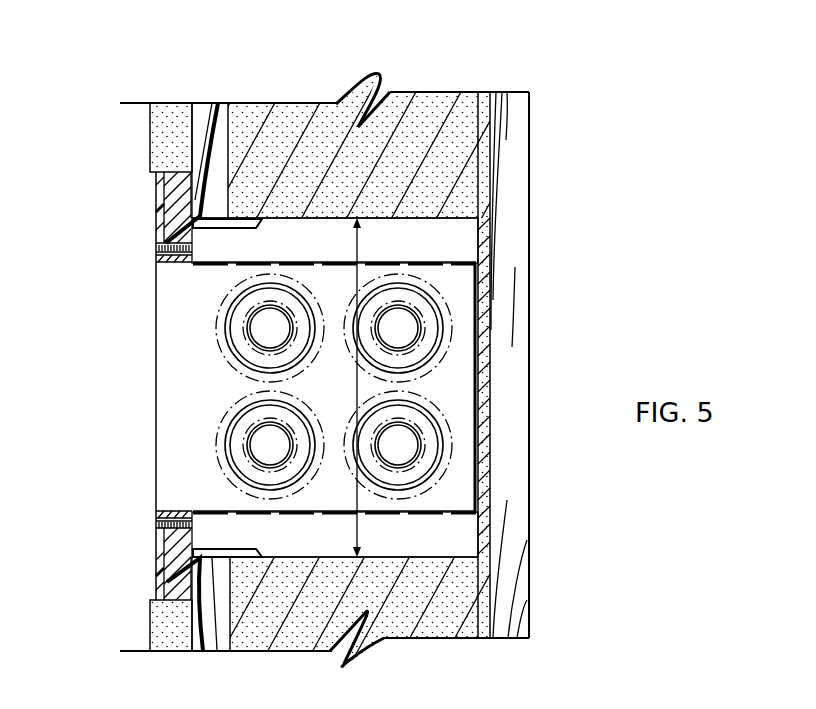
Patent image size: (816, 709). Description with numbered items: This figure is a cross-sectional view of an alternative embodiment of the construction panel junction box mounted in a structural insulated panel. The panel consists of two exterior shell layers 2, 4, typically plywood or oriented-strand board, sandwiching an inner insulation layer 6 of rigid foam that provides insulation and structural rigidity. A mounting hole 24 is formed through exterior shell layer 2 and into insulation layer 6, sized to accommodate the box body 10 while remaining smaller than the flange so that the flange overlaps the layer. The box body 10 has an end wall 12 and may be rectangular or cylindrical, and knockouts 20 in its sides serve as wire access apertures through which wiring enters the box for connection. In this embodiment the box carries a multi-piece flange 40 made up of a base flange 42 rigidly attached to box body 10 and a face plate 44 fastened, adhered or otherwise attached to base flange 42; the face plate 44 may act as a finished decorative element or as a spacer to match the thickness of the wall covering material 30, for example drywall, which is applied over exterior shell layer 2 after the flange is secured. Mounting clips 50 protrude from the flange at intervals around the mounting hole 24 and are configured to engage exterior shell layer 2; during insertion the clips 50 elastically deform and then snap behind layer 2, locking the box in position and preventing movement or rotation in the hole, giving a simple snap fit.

The exterior shell layer 2 is at (236, 112).
The exterior shell layer 4 is at (543, 268).
The inner insulation layer 6 is at (430, 135).
The box body 10 is at (420, 246).
The end wall 12 is at (494, 330).
The knockouts 20 is at (262, 328).
The mounting hole 24 is at (357, 384).
The wall covering material 30 is at (178, 103).
The multi-piece flange 40 is at (72, 131).
The base flange 42 is at (173, 172).
The face plate 44 is at (163, 175).
The mounting clips 50 is at (234, 222).